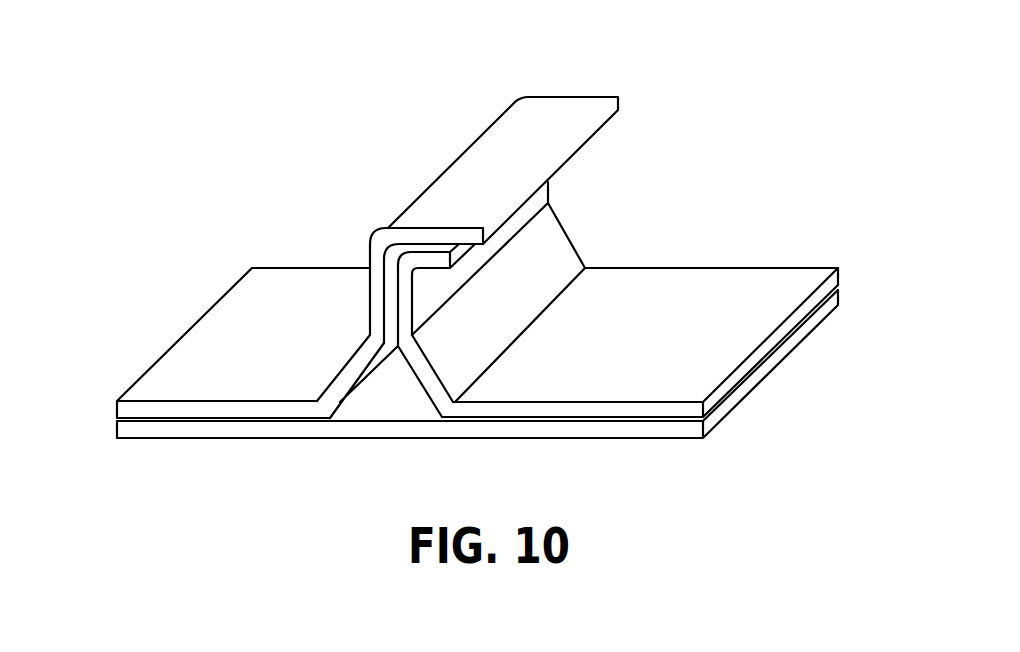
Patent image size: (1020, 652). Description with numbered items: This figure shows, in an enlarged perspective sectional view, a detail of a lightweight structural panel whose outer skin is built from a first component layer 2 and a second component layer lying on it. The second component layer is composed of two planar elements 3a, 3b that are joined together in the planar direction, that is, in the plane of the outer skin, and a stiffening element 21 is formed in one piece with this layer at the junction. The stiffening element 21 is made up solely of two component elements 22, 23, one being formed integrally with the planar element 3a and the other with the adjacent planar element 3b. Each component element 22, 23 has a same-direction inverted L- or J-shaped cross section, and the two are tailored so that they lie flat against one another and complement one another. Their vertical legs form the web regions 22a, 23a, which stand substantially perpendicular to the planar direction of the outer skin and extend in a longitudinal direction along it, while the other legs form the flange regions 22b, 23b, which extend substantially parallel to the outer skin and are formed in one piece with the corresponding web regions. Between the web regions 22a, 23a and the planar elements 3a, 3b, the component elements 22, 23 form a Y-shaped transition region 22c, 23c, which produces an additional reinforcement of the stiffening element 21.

The first component layer 2 is at (617, 430).
The planar element 3a is at (790, 283).
The planar element 3b is at (295, 277).
The stiffening element 21 is at (473, 108).
The component element 22 is at (568, 219).
The web region 22a is at (427, 287).
The flange region 22b is at (423, 262).
The Y-shaped transition region 22c is at (555, 277).
The component element 23 is at (334, 334).
The web region 23a is at (367, 291).
The flange region 23b is at (547, 117).
The Y-shaped transition region 23c is at (352, 373).